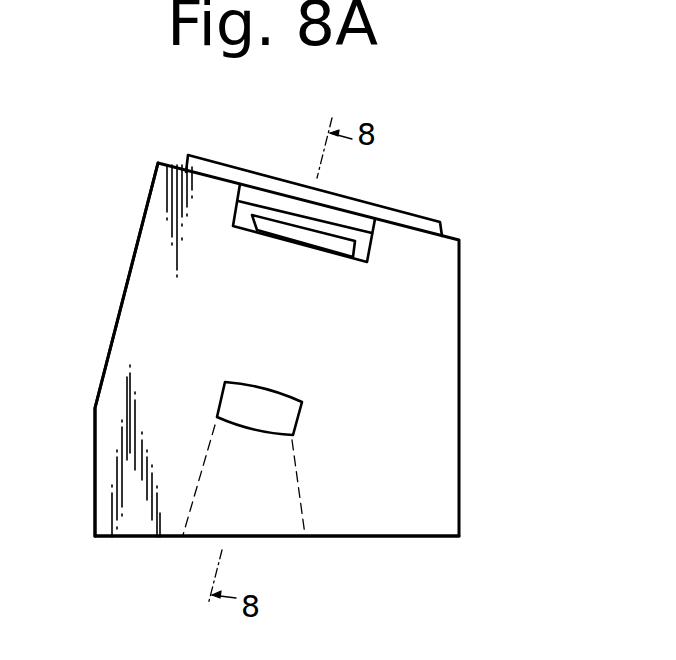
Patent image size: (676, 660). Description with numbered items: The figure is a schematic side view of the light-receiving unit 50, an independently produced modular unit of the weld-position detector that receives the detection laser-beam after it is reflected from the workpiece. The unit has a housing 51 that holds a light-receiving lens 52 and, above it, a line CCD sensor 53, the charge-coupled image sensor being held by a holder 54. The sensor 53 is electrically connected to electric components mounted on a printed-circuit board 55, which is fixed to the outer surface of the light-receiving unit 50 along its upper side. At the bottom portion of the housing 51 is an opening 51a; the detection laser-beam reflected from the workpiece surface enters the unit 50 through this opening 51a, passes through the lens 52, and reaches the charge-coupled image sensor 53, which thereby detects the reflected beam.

The light-receiving unit 50 is at (462, 252).
The housing 51 is at (121, 303).
The opening 51a is at (270, 536).
The light-receiving lens 52 is at (302, 413).
The line CCD sensor 53 is at (275, 228).
The holder 54 is at (373, 252).
The printed-circuit board 55 is at (417, 220).